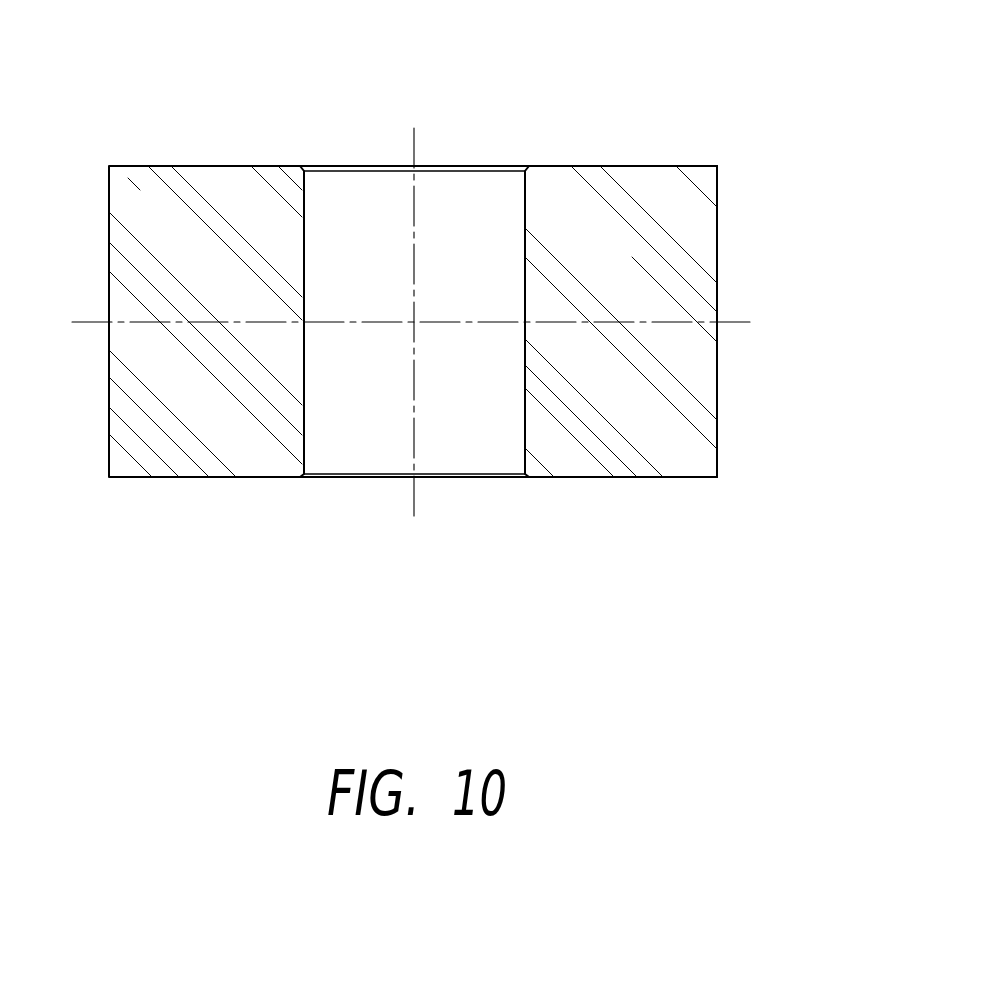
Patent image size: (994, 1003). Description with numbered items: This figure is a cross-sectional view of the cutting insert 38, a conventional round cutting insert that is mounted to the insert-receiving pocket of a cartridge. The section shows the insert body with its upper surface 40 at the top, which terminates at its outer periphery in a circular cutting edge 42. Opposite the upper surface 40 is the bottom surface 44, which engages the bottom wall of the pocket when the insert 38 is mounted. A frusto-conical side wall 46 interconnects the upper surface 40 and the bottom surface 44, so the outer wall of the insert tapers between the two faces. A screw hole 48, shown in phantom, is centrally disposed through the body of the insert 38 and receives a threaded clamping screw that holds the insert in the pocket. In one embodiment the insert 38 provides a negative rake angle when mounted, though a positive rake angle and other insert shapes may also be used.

The cutting insert 38 is at (112, 84).
The upper surface 40 is at (565, 167).
The circular cutting edge 42 is at (720, 167).
The bottom surface 44 is at (617, 480).
The frusto-conical side wall 46 is at (717, 405).
The screw hole 48 is at (307, 200).